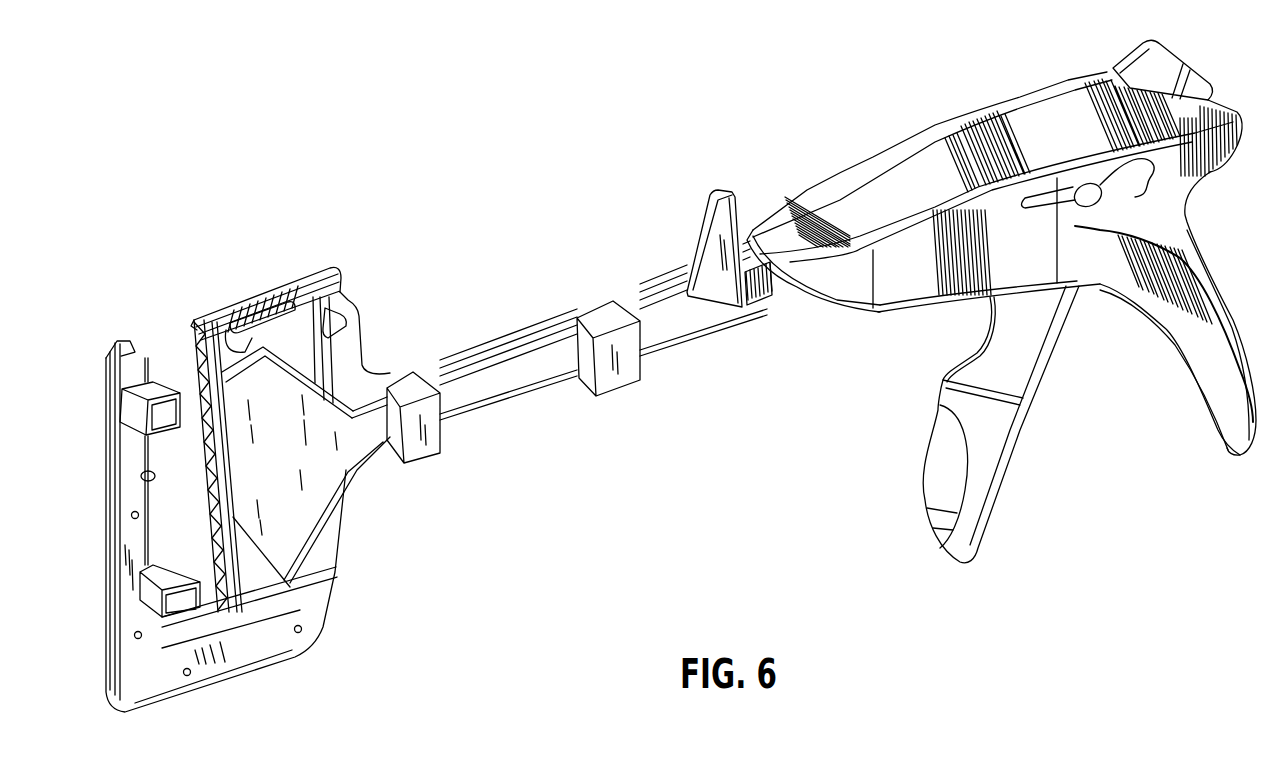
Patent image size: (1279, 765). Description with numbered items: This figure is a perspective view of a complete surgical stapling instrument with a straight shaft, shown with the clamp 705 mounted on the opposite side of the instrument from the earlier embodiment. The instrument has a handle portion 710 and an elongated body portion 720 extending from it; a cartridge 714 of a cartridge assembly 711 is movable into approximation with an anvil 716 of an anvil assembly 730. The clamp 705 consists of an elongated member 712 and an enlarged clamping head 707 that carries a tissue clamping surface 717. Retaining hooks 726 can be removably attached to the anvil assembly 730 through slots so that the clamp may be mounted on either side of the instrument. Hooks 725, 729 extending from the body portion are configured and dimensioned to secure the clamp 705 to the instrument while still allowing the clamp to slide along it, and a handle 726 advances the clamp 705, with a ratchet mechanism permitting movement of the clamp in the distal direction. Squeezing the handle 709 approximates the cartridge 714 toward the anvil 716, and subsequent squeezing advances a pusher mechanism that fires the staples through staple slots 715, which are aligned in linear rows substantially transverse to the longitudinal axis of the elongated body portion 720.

The clamp 705 is at (333, 477).
The enlarged clamping head 707 is at (285, 513).
The handle 709 is at (987, 448).
The handle portion 710 is at (944, 572).
The cartridge assembly 711 is at (265, 272).
The elongated member 712 is at (520, 380).
The cartridge 714 is at (297, 286).
The staple slots 715 is at (196, 350).
The anvil 716 is at (145, 476).
The tissue clamping surface 717 is at (290, 587).
The elongated body portion 720 is at (770, 293).
The hook 725 is at (613, 380).
The retaining hooks 726 is at (163, 405).
The hook 729 is at (423, 447).
The anvil assembly 730 is at (162, 335).